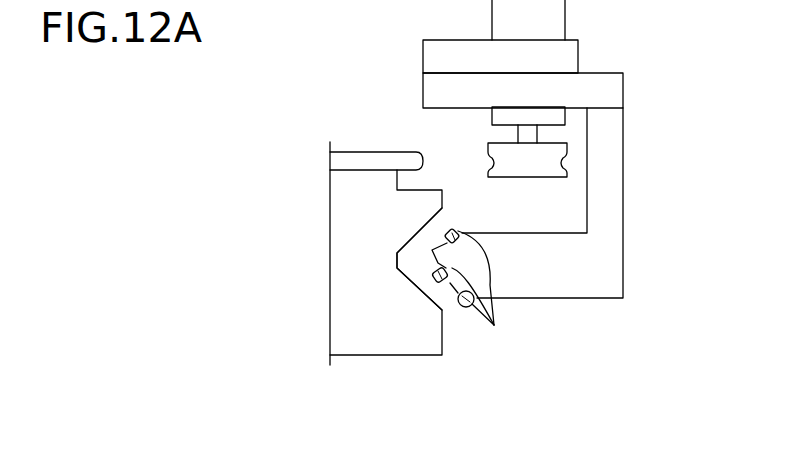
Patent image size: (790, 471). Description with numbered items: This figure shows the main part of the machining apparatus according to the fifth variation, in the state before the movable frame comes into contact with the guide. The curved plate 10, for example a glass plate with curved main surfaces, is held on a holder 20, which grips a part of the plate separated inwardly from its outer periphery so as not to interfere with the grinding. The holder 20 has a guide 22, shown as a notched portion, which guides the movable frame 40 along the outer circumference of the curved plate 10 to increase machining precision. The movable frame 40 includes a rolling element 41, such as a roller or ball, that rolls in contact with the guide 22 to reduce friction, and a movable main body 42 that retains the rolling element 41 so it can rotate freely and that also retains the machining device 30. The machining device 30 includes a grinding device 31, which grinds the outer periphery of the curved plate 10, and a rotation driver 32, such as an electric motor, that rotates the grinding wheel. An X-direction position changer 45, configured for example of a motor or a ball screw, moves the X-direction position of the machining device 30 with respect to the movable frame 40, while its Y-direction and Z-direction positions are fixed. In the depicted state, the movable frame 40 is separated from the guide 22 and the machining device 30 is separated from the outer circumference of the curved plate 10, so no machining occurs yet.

The curved plate 10 is at (357, 140).
The holder 20 is at (339, 213).
The guide 22 is at (380, 260).
The machining device 30 is at (608, 138).
The grinding device 31 is at (553, 148).
The rotation driver 32 is at (553, 118).
The movable frame 40 is at (527, 251).
The rolling element 41 is at (470, 293).
The movable main body 42 is at (541, 298).
The X-direction position changer 45 is at (570, 55).